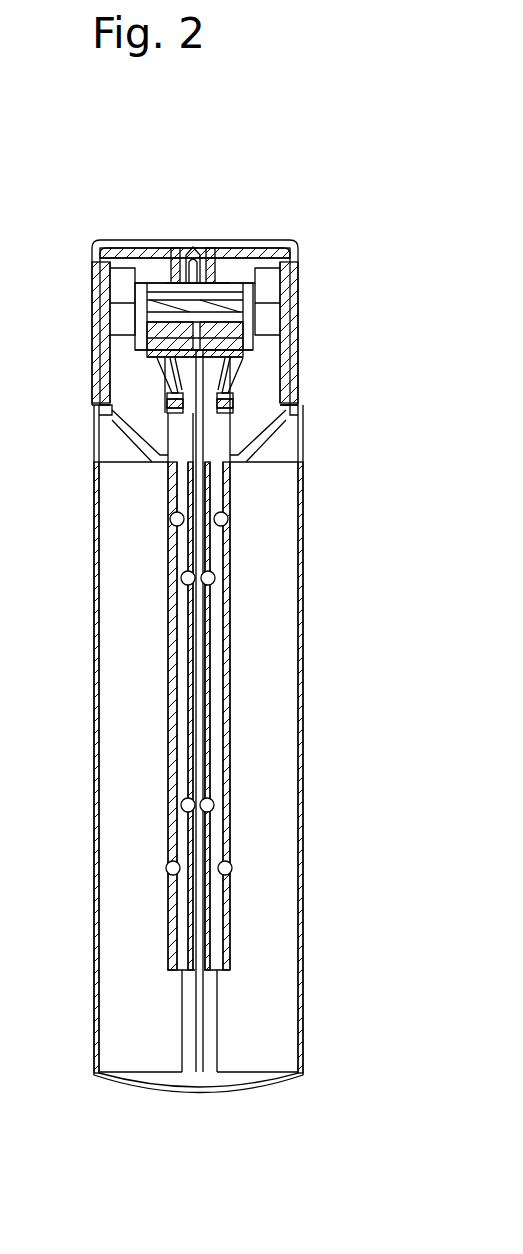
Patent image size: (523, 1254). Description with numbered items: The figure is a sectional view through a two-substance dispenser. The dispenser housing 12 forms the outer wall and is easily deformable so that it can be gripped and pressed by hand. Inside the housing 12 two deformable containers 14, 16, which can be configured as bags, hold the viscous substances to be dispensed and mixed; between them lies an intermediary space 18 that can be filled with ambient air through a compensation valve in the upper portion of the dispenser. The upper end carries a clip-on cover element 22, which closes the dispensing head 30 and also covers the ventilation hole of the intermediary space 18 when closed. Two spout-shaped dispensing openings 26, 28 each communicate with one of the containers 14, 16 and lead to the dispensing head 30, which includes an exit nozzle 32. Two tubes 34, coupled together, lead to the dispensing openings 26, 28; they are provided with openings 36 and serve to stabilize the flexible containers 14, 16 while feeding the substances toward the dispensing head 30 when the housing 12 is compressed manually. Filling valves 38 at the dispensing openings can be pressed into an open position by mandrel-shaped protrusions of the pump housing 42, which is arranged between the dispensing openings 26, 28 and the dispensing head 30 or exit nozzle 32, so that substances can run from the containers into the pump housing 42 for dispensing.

The dispenser housing 12 is at (300, 778).
The container 14 is at (297, 690).
The container 16 is at (122, 745).
The intermediary space 18 is at (207, 1077).
The cover element 22 is at (97, 240).
The dispensing opening 26 is at (229, 418).
The dispensing opening 28 is at (167, 403).
The dispensing head 30 is at (227, 275).
The exit nozzle 32 is at (196, 254).
The tubes 34 is at (168, 625).
The openings 36 is at (187, 807).
The filling valves 38 is at (175, 390).
The pump housing 42 is at (268, 303).